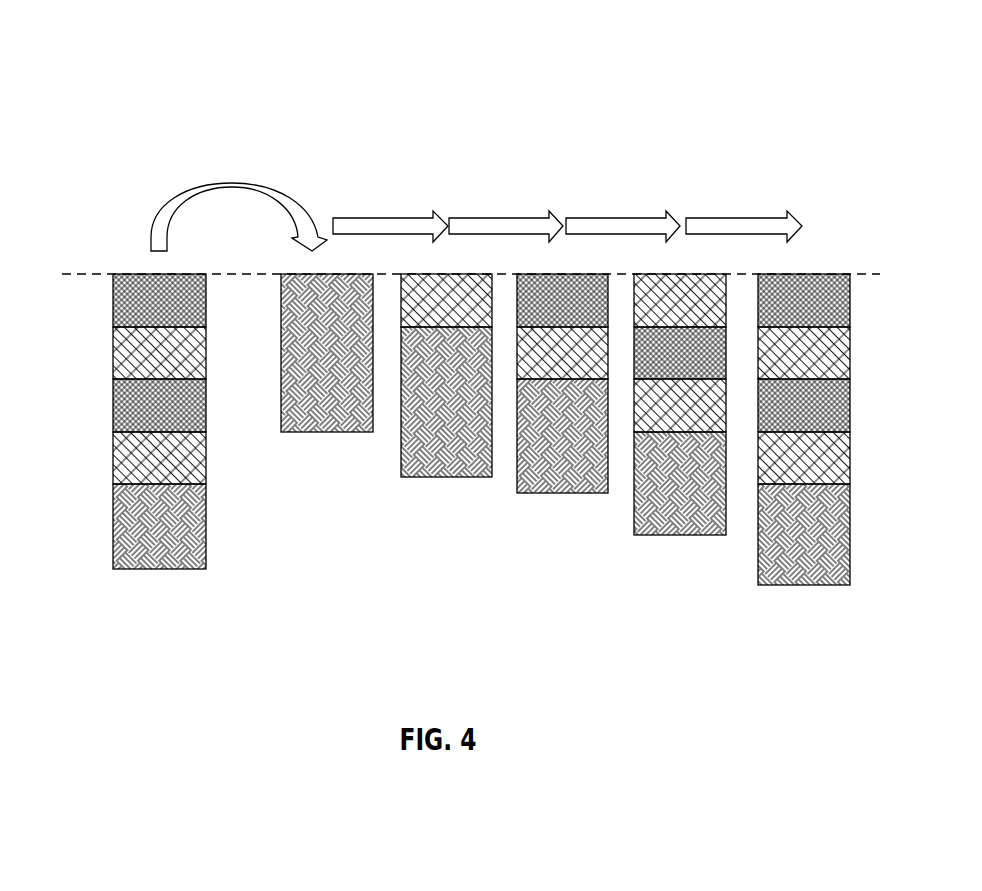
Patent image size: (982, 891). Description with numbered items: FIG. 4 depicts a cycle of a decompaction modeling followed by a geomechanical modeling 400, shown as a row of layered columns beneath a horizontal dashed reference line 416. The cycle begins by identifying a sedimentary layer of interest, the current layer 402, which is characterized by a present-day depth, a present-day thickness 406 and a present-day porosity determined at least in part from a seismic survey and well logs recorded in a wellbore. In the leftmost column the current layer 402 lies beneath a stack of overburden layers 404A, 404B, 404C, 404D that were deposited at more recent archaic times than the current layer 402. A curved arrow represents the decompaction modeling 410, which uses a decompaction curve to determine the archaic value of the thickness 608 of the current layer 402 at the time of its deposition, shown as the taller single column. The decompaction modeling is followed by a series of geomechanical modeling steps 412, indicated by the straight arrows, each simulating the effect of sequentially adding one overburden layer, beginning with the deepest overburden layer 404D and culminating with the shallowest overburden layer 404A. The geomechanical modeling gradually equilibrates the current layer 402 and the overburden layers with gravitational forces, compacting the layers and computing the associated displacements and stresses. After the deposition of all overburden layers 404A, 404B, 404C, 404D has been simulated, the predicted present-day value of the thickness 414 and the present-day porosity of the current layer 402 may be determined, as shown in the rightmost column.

The cycle of decompaction modeling followed by geomechanical modeling 400 is at (725, 53).
The current layer 402 is at (425, 416).
The shallowest overburden layer 404A is at (128, 315).
The overburden layer 404B is at (128, 367).
The overburden layer 404C is at (128, 420).
The deepest overburden layer 404D is at (128, 472).
The present-day thickness 406 is at (138, 541).
The decompaction modeling 410 is at (202, 182).
The geomechanical modeling steps 412 is at (389, 216).
The predicted present-day value of the thickness 414 is at (756, 484).
The reference plane 416 is at (86, 273).
The archaic value of the thickness 608 is at (306, 367).